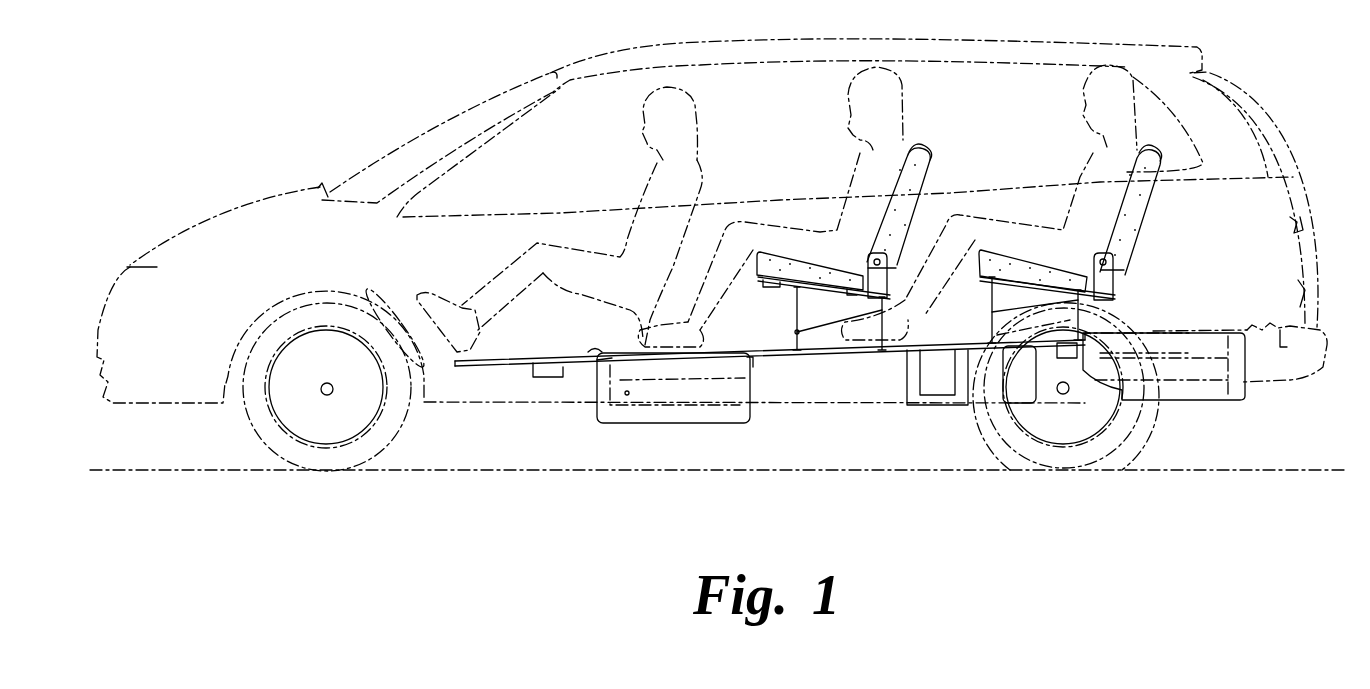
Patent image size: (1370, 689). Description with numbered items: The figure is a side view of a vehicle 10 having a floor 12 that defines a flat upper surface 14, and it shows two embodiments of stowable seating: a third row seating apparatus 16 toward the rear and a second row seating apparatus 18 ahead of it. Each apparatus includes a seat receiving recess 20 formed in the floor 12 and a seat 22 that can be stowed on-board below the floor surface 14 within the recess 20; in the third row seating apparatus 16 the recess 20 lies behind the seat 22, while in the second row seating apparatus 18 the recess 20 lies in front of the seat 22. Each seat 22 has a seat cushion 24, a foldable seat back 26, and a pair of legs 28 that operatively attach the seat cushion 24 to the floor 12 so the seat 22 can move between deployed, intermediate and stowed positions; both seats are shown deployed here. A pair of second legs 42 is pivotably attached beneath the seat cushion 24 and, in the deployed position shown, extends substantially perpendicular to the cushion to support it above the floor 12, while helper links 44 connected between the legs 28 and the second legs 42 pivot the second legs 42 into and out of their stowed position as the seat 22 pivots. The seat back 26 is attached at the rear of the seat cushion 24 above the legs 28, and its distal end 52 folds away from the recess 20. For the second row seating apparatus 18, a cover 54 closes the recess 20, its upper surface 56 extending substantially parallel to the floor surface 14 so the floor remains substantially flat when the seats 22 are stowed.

The vehicle 10 is at (1218, 69).
The floor 12 is at (970, 327).
The upper surface of the floor 14 is at (1003, 342).
The third row seating apparatus 16 is at (1145, 208).
The second row seating apparatus 18 is at (935, 168).
The seat receiving recess 20 is at (601, 387).
The seat 22 is at (928, 183).
The seat cushion 24 is at (755, 283).
The foldable seat back 26 is at (905, 203).
The legs 28 is at (797, 302).
The second legs 42 is at (863, 333).
The helper links 44 is at (828, 333).
The distal end of the seat back 52 is at (927, 150).
The cover 54 is at (620, 350).
The upper surface of the cover 56 is at (590, 354).